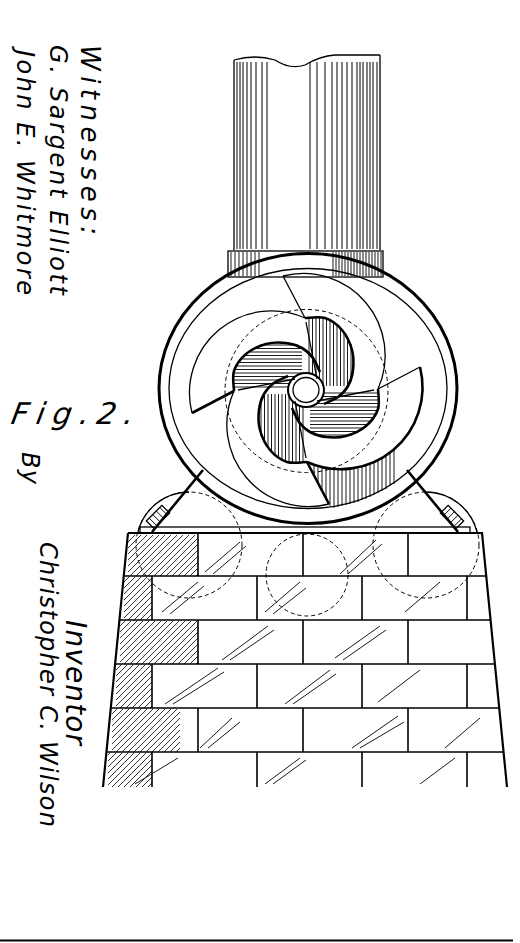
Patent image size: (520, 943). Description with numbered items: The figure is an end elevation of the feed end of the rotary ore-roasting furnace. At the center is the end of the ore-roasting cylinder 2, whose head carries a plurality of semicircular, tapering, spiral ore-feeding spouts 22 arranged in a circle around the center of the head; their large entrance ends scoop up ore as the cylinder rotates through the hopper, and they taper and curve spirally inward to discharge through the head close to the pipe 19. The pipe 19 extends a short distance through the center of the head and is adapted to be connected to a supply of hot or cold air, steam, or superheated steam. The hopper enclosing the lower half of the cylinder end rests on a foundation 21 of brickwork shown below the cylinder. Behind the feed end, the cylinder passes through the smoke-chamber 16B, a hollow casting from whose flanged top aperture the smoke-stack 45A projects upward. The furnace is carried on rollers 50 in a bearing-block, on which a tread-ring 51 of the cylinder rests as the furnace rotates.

The smoke-stack 45A is at (381, 163).
The smoke-chamber 16B is at (420, 338).
The tread-ring 51 is at (455, 425).
The ore-roasting cylinder 2 is at (290, 312).
The ore-feeding spouts 22 is at (305, 390).
The pipe 19 is at (306, 390).
The rollers 50 is at (458, 503).
The foundation 21 is at (127, 554).